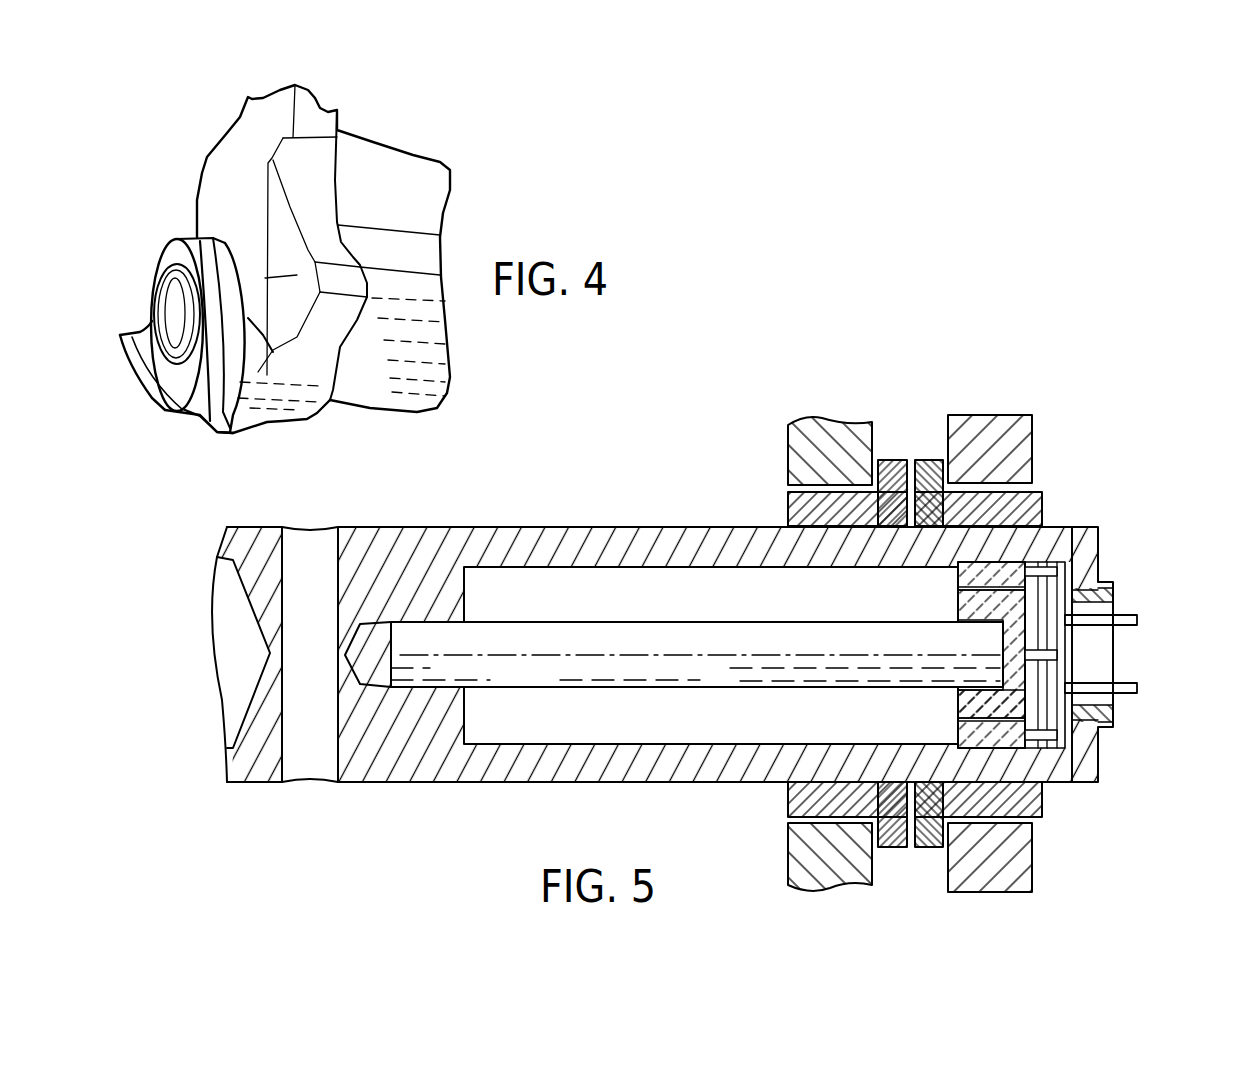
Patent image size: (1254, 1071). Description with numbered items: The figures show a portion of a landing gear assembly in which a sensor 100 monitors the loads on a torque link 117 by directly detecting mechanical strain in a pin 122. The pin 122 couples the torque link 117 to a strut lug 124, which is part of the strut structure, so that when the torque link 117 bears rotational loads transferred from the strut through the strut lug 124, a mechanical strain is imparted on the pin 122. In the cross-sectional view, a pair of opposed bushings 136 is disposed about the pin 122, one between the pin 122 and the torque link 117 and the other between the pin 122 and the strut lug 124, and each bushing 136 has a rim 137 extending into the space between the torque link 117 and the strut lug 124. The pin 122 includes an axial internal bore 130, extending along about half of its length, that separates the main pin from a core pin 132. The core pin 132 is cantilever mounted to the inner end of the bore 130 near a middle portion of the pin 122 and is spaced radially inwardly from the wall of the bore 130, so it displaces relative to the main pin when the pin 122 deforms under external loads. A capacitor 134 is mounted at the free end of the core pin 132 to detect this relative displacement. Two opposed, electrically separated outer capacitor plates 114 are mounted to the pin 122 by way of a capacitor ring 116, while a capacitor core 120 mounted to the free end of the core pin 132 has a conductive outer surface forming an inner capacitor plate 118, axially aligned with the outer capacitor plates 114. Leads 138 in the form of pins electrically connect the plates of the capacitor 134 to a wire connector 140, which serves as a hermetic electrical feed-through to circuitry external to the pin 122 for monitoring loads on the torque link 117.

In FIG. 4, the sensor 100 is at (139, 166).
In FIG. 5, the sensor 100 is at (195, 745).
In FIG. 5, the outer capacitor plates 114 is at (968, 748).
In FIG. 5, the capacitor ring 116 is at (973, 573).
In FIG. 4, the first jaw bracket 117 is at (313, 172).
In FIG. 5, the first jaw bracket 117 is at (818, 422).
In FIG. 5, the inner capacitor plate 118 is at (1037, 750).
In FIG. 5, the capacitor core 120 is at (980, 700).
In FIG. 4, the pin 122 is at (177, 305).
In FIG. 5, the pin 122 is at (665, 525).
In FIG. 4, the strut lug 124 is at (163, 400).
In FIG. 5, the strut lug 124 is at (1015, 442).
In FIG. 5, the internal bore 130 is at (590, 582).
In FIG. 5, the core pin 132 is at (722, 653).
In FIG. 5, the capacitor 134 is at (1010, 565).
In FIG. 4, the bushings 136 is at (273, 352).
In FIG. 5, the bushings 136 is at (797, 510).
In FIG. 5, the rim 137 is at (889, 462).
In FIG. 5, the leads 138 is at (1053, 572).
In FIG. 5, the wire connector 140 is at (1113, 720).